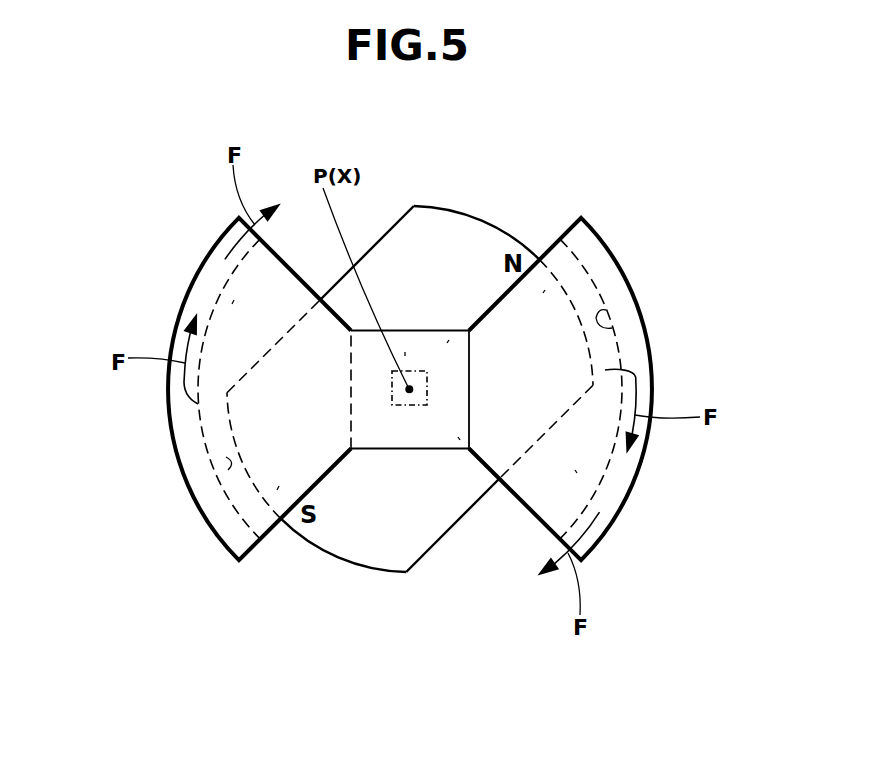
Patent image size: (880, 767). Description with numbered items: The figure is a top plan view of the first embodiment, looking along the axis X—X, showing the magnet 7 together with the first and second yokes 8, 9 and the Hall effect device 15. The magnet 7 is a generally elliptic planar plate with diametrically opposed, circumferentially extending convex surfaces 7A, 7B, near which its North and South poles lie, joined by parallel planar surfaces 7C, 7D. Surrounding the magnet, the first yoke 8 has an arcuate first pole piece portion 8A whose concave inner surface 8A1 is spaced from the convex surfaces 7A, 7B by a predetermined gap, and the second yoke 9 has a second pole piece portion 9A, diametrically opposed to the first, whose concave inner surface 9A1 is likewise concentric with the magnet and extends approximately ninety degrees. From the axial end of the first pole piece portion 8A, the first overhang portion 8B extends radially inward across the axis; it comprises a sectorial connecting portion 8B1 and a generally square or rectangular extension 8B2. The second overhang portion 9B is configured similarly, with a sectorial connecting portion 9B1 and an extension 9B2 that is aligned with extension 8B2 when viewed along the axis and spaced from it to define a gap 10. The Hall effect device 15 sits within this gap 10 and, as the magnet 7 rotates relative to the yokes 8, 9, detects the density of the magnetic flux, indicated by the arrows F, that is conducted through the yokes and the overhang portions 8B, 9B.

The magnet 7 is at (373, 537).
The convex surface 7A is at (497, 225).
The convex surface 7B is at (320, 548).
The planar surface 7C is at (458, 525).
The planar surface 7D is at (386, 234).
The first yoke 8 is at (640, 375).
The first pole piece portion 8A is at (607, 273).
The concave inner surface 8A1 is at (612, 328).
The first overhang portion 8B is at (577, 473).
The sectorial connecting portion 8B1 is at (543, 293).
The extension 8B2 is at (458, 437).
The second yoke 9 is at (222, 525).
The second pole piece portion 9A is at (178, 423).
The concave inner surface 9A1 is at (228, 470).
The second overhang portion 9B is at (232, 304).
The sectorial connecting portion 9B1 is at (277, 490).
The extension 9B2 is at (447, 343).
The gap 10 is at (405, 352).
The Hall effect device 15 is at (417, 403).